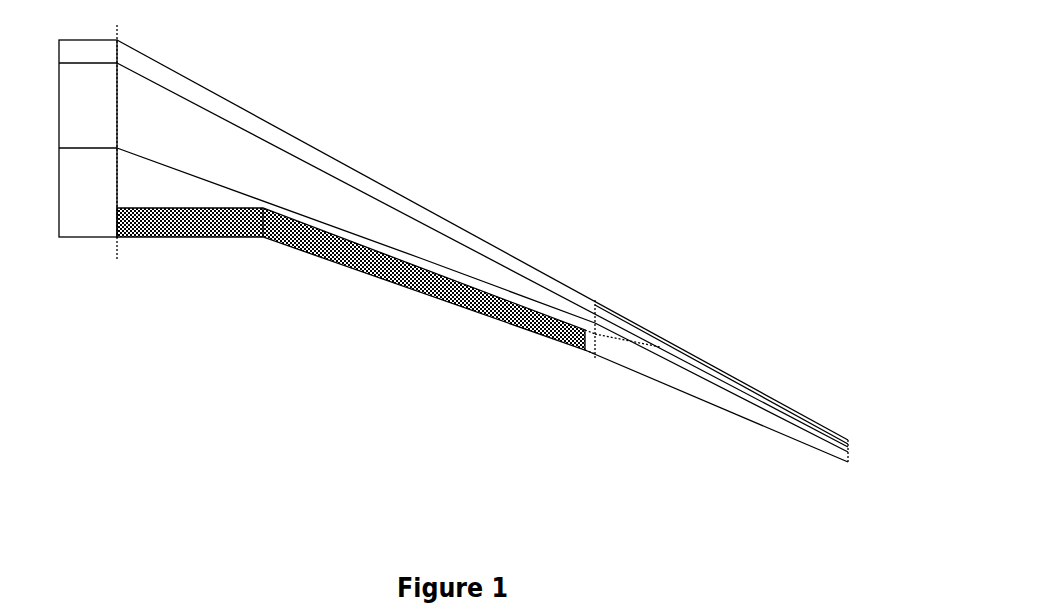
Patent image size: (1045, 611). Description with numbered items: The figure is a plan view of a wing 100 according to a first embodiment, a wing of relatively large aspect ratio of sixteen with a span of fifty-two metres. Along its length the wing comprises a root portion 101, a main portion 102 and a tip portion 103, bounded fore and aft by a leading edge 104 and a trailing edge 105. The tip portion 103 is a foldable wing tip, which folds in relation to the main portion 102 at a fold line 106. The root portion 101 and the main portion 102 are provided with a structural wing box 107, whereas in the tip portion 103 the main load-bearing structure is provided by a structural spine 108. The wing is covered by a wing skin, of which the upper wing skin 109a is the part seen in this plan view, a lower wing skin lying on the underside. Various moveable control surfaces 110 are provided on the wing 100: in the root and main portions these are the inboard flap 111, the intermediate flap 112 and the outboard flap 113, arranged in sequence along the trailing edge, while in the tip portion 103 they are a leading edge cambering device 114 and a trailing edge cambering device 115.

The wing 100 is at (680, 79).
The root portion 101 is at (158, 72).
The main portion 102 is at (295, 180).
The tip portion 103 is at (788, 376).
The leading edge 104 is at (230, 100).
The trailing edge 105 is at (603, 360).
The fold line 106 is at (597, 323).
The structural wing box 107 is at (345, 203).
The structural spine 108 is at (845, 440).
The upper wing skin 109a is at (240, 162).
The moveable control surfaces 110 is at (301, 360).
The inboard flap 111 is at (197, 222).
The intermediate flap 112 is at (330, 250).
The outboard flap 113 is at (472, 300).
The leading edge cambering device 114 is at (682, 354).
The trailing edge cambering device 115 is at (718, 400).